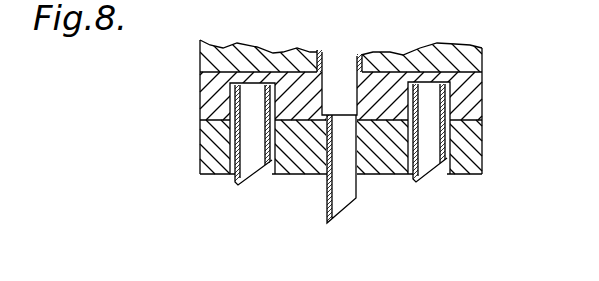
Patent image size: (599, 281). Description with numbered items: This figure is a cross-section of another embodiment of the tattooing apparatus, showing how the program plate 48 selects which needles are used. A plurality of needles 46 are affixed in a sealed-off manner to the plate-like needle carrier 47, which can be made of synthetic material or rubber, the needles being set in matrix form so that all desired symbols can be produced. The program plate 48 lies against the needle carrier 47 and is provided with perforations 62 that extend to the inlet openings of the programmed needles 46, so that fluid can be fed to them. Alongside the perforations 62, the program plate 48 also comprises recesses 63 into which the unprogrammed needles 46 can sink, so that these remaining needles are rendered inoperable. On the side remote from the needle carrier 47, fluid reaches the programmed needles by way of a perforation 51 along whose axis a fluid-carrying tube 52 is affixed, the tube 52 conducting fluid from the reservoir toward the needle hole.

The needle 46 is at (238, 184).
The needle carrier 47 is at (468, 157).
The program plate 48 is at (450, 95).
The perforation 51 is at (322, 52).
The fluid-carrying tube 52 is at (371, 82).
The perforation 62 is at (380, 74).
The recess 63 is at (231, 104).